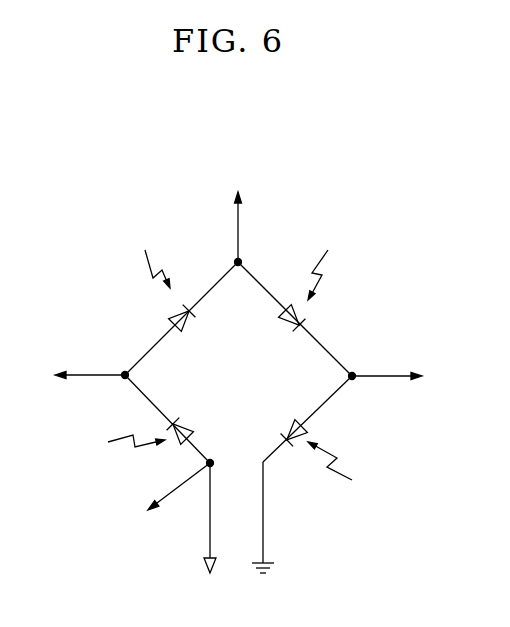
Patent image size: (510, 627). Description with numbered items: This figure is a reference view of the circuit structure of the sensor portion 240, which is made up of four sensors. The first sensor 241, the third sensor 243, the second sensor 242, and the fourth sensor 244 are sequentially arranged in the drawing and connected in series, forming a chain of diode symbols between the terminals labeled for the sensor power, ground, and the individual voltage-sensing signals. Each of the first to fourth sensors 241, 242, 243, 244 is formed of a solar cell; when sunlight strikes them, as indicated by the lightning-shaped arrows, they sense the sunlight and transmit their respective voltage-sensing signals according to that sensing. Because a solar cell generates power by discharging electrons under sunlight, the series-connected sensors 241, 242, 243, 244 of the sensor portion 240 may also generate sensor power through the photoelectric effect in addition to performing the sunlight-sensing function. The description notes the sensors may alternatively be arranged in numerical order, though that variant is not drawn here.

The sensor portion 240 is at (380, 229).
The first sensor 241 is at (198, 422).
The second sensor 242 is at (285, 323).
The third sensor 243 is at (193, 322).
The fourth sensor 244 is at (283, 422).